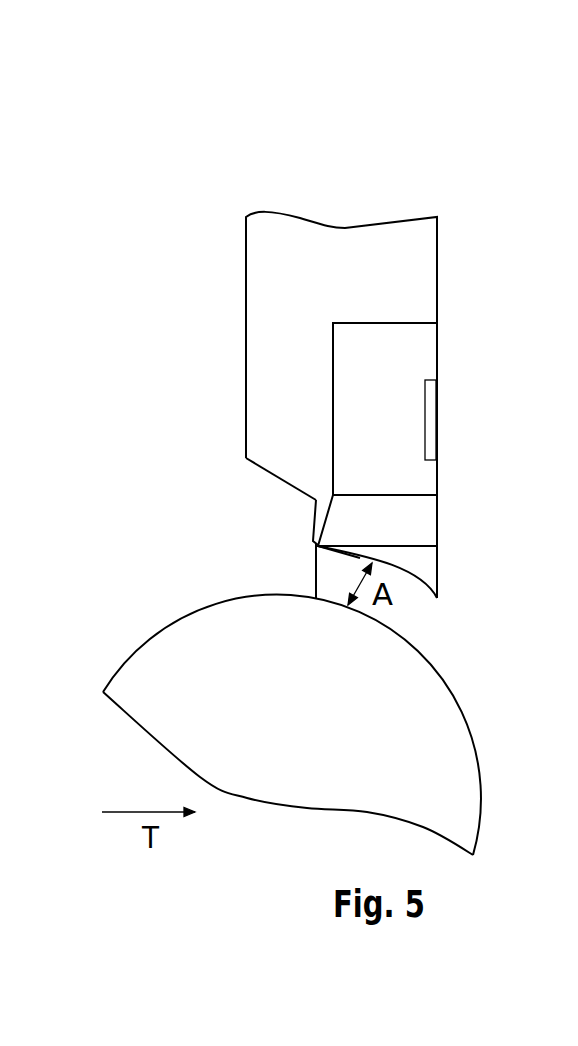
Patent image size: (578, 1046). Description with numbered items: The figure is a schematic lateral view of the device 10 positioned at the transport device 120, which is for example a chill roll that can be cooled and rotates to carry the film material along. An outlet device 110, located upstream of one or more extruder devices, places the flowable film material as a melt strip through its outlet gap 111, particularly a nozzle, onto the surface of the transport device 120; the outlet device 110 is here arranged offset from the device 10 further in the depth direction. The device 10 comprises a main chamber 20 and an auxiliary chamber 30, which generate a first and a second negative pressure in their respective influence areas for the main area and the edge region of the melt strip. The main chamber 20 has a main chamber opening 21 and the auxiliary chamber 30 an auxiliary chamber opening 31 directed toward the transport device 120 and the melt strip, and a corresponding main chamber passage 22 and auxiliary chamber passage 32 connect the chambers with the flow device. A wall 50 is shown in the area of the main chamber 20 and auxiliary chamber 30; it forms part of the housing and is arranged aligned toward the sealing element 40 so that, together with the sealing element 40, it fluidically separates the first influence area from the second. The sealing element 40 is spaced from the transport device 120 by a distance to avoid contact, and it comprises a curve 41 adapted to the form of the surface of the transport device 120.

The device 10 is at (325, 197).
The outlet device 110 is at (245, 275).
The outlet gap 111 is at (320, 522).
The main chamber 20 is at (385, 409).
The auxiliary chamber 30 is at (413, 413).
The main chamber passage 22 is at (464, 462).
The auxiliary chamber passage 32 is at (433, 418).
The wall 50 is at (402, 535).
The sealing element 40 is at (382, 555).
The curve 41 is at (421, 600).
The main chamber opening 21 is at (233, 586).
The auxiliary chamber opening 31 is at (338, 570).
The transport device 120 is at (362, 758).